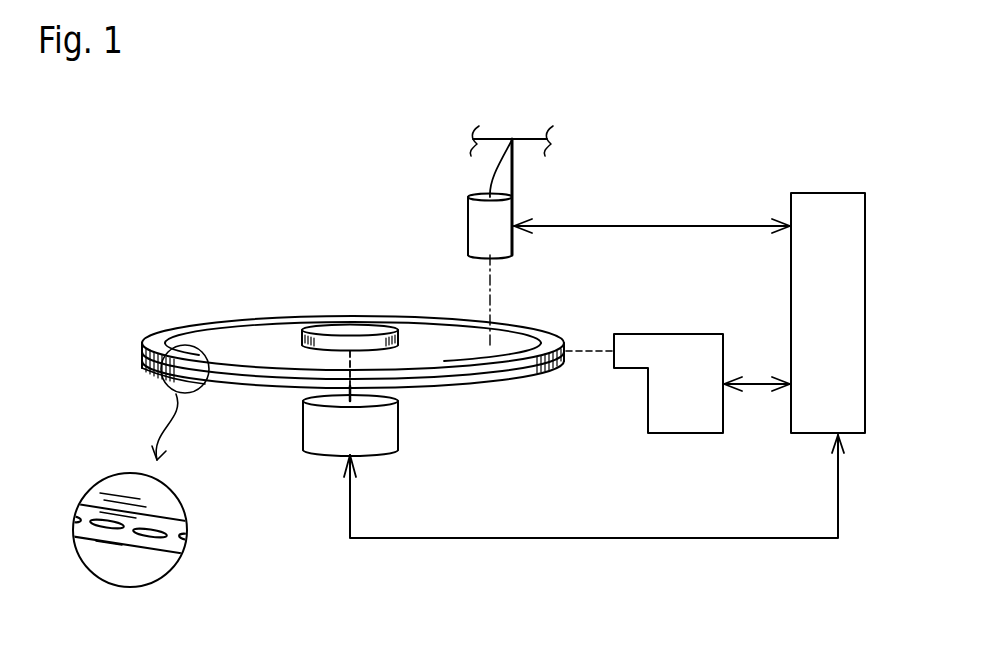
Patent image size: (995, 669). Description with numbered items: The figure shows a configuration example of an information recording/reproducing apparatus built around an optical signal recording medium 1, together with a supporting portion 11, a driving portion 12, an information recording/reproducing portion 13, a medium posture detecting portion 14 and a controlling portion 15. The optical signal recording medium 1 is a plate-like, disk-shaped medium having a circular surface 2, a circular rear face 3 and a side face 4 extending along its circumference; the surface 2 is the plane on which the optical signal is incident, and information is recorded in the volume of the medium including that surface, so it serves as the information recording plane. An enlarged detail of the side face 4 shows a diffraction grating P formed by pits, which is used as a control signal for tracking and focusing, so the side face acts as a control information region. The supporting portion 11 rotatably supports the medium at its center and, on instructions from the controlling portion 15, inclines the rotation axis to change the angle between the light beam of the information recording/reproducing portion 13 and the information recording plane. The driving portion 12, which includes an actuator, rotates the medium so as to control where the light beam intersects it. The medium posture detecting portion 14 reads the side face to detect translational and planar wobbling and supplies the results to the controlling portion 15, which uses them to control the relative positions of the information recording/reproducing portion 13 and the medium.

The optical signal recording medium 1 is at (150, 298).
The surface 2 is at (242, 333).
The rear face 3 is at (247, 398).
The side face 4 is at (141, 352).
The diffraction grating P is at (151, 534).
The supporting portion 11 is at (352, 330).
The driving portion 12 is at (323, 453).
The information recording/reproducing portion 13 is at (528, 195).
The medium posture detecting portion 14 is at (688, 334).
The controlling portion 15 is at (828, 193).